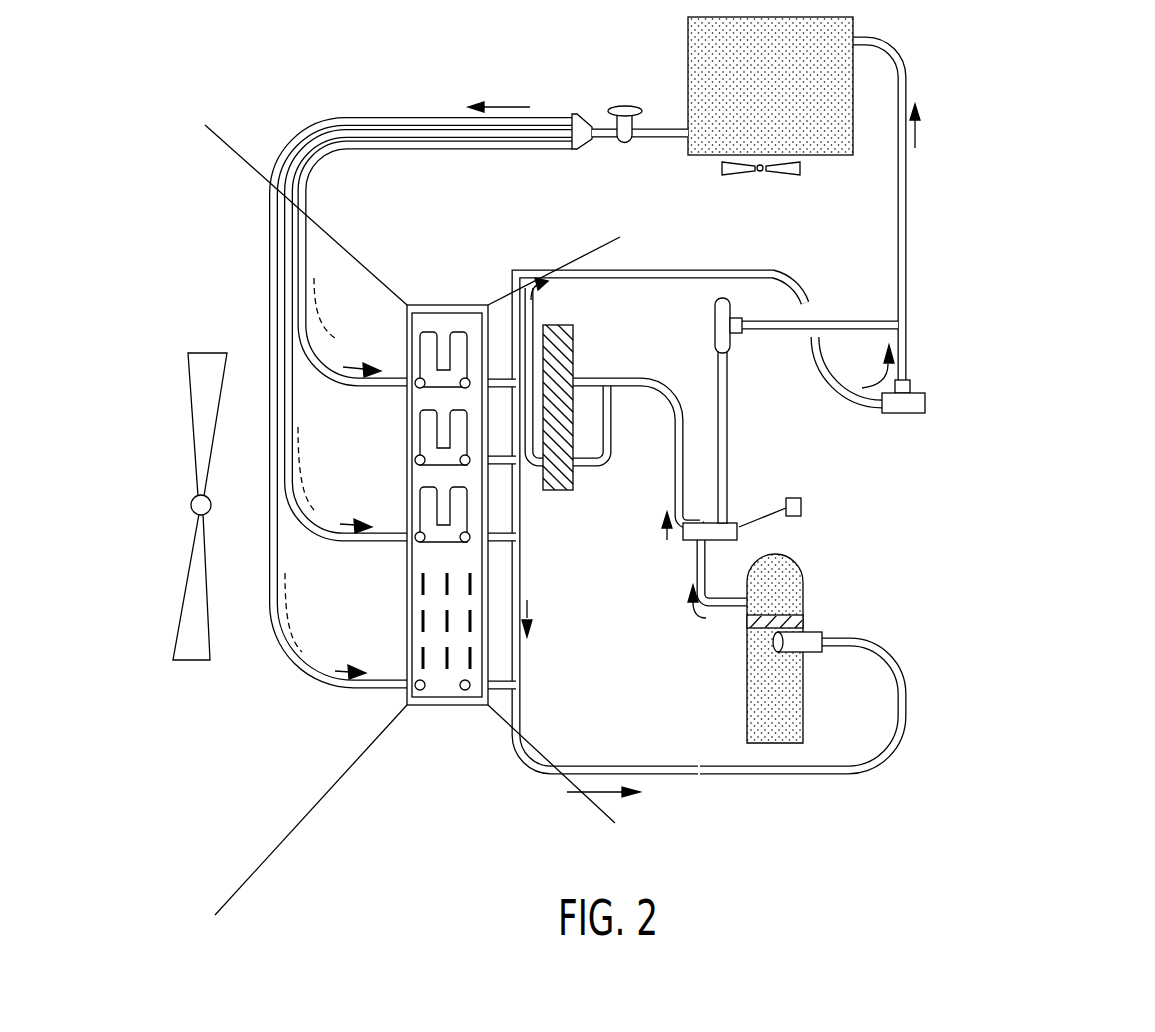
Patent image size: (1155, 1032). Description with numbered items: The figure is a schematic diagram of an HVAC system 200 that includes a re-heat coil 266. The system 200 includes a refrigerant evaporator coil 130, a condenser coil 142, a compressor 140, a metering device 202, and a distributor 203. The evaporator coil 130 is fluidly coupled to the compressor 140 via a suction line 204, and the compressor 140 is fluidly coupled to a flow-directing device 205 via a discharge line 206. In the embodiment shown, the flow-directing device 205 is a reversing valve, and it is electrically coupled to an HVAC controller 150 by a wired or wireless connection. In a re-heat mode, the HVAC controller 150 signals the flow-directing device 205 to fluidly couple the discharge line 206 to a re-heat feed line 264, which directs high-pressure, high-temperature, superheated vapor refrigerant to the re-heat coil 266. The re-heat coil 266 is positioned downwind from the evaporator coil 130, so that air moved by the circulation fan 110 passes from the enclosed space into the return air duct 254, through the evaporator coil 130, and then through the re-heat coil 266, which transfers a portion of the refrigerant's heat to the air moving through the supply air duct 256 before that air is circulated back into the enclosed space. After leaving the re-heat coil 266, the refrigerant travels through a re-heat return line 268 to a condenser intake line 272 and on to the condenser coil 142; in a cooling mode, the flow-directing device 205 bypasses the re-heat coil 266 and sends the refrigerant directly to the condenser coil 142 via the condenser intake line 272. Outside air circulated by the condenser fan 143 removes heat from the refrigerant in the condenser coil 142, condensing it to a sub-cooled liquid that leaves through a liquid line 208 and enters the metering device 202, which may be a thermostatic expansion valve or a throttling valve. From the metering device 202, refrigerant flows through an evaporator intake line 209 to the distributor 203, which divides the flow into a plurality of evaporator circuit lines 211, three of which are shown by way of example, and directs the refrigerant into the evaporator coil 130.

The HVAC system 200 is at (1084, 112).
The circulation fan 110 is at (207, 352).
The refrigerant evaporator coil 130 is at (445, 706).
The compressor 140 is at (790, 707).
The condenser coil 142 is at (833, 152).
The condenser fan 143 is at (766, 175).
The HVAC controller 150 is at (803, 506).
The metering device 202 is at (626, 108).
The distributor 203 is at (582, 124).
The suction line 204 is at (682, 775).
The flow-directing device 205 is at (726, 522).
The discharge line 206 is at (712, 565).
The liquid line 208 is at (662, 127).
The evaporator intake line 209 is at (605, 126).
The evaporator circuit lines 211 is at (345, 388).
The return air duct 254 is at (273, 744).
The supply air duct 256 is at (568, 681).
The re-heat feed line 264 is at (652, 378).
The re-heat coil 266 is at (553, 494).
The re-heat return line 268 is at (529, 320).
The condenser intake line 272 is at (906, 292).